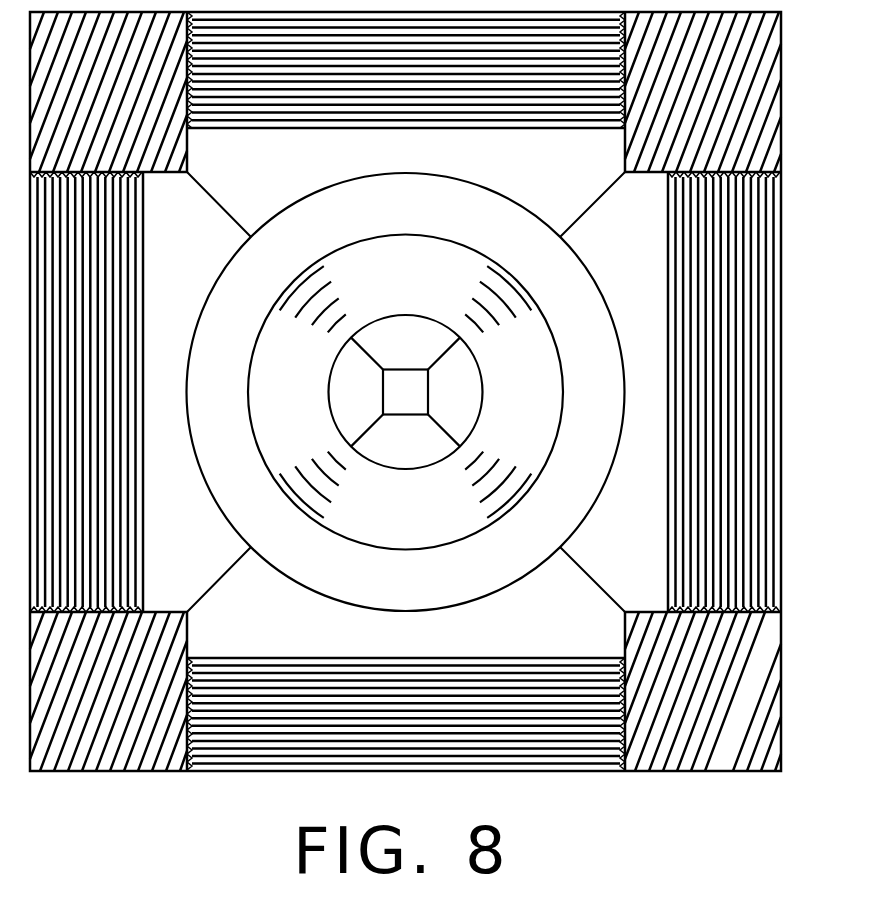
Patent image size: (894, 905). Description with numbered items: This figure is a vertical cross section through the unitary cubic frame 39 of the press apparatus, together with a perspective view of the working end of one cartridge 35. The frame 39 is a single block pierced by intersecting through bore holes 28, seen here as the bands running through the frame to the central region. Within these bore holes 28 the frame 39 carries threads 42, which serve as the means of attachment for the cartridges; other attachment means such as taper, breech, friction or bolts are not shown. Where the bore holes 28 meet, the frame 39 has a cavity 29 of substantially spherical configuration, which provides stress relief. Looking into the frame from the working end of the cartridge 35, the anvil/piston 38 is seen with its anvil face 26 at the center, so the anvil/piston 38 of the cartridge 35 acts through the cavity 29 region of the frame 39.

The anvil face 26 is at (418, 388).
The through bore holes 28 is at (781, 564).
The cavity 29 is at (612, 503).
The cartridge 35 is at (595, 437).
The anvil/piston 38 is at (510, 327).
The unitary frame 39 is at (753, 107).
The threads 42 is at (742, 370).